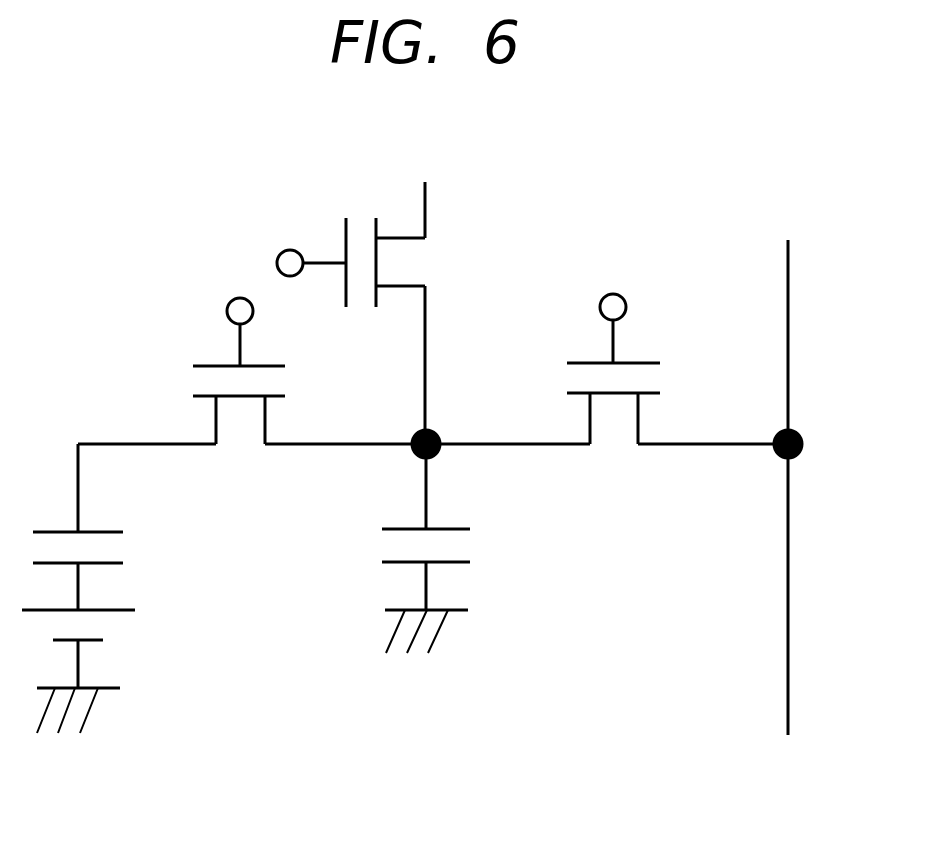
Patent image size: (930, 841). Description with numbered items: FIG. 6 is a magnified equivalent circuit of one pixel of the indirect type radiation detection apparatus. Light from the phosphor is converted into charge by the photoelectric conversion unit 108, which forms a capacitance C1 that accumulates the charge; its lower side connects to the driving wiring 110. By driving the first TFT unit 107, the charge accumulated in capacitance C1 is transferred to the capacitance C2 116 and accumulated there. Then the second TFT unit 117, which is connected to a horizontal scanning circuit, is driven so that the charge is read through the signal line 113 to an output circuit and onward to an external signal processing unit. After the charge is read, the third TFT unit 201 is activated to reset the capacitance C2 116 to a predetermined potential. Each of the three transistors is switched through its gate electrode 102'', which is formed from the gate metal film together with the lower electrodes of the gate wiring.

The TFT unit 1 107 is at (185, 362).
The TFT unit 2 117 is at (615, 324).
The TFT unit 3 201 is at (352, 218).
The gate electrode 102'' is at (382, 268).
The signal line 113 is at (788, 467).
The photoelectric conversion unit 108 is at (130, 527).
The capacitance C2 116 is at (480, 548).
The driving wiring 110 is at (78, 693).